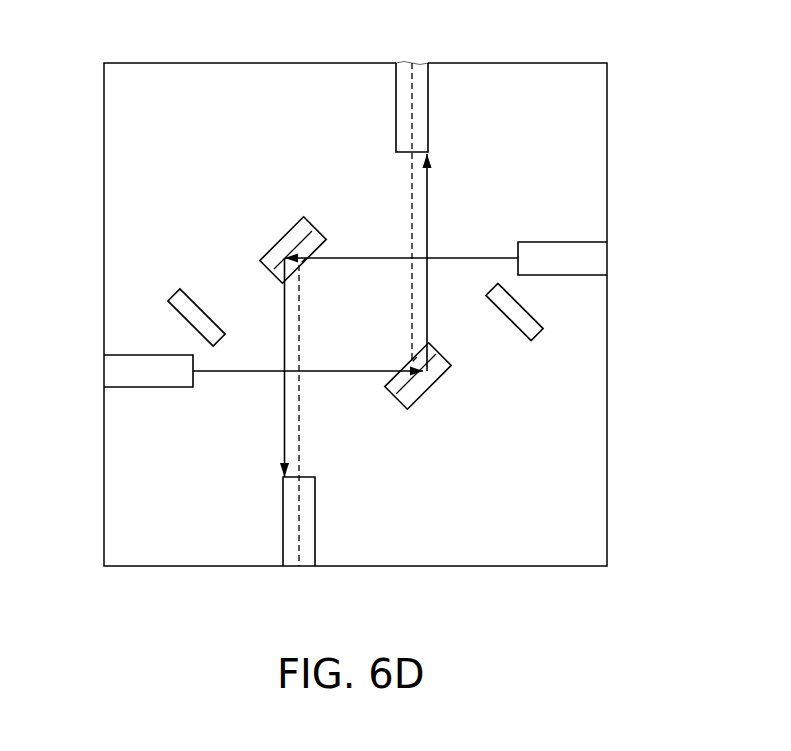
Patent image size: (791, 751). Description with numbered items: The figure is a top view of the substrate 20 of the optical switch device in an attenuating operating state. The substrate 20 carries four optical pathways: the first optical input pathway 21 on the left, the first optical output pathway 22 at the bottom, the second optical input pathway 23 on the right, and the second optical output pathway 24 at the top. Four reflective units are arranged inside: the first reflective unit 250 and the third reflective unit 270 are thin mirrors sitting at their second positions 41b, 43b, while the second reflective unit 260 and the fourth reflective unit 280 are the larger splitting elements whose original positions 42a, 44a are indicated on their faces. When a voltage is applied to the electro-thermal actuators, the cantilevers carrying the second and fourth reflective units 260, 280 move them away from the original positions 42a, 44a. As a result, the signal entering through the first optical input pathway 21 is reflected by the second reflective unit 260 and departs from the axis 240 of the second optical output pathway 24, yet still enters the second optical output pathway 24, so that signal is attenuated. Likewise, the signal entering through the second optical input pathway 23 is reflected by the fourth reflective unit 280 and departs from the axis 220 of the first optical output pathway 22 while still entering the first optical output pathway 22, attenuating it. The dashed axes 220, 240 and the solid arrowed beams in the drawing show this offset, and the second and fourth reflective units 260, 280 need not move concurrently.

The substrate 20 is at (607, 150).
The first optical input pathway 21 is at (104, 371).
The first optical output pathway 22 is at (299, 567).
The second optical input pathway 23 is at (608, 258).
The second optical output pathway 24 is at (410, 63).
The first reflective unit 250 is at (159, 285).
The second reflective unit 260 is at (426, 387).
The third reflective unit 270 is at (588, 335).
The fourth reflective unit 280 is at (327, 221).
The second position 41b is at (203, 311).
The original position 42a is at (393, 396).
The second position 43b is at (520, 305).
The original position 44a is at (322, 235).
The axis of the first optical output pathway 220 is at (300, 430).
The axis of the second optical output pathway 240 is at (410, 188).